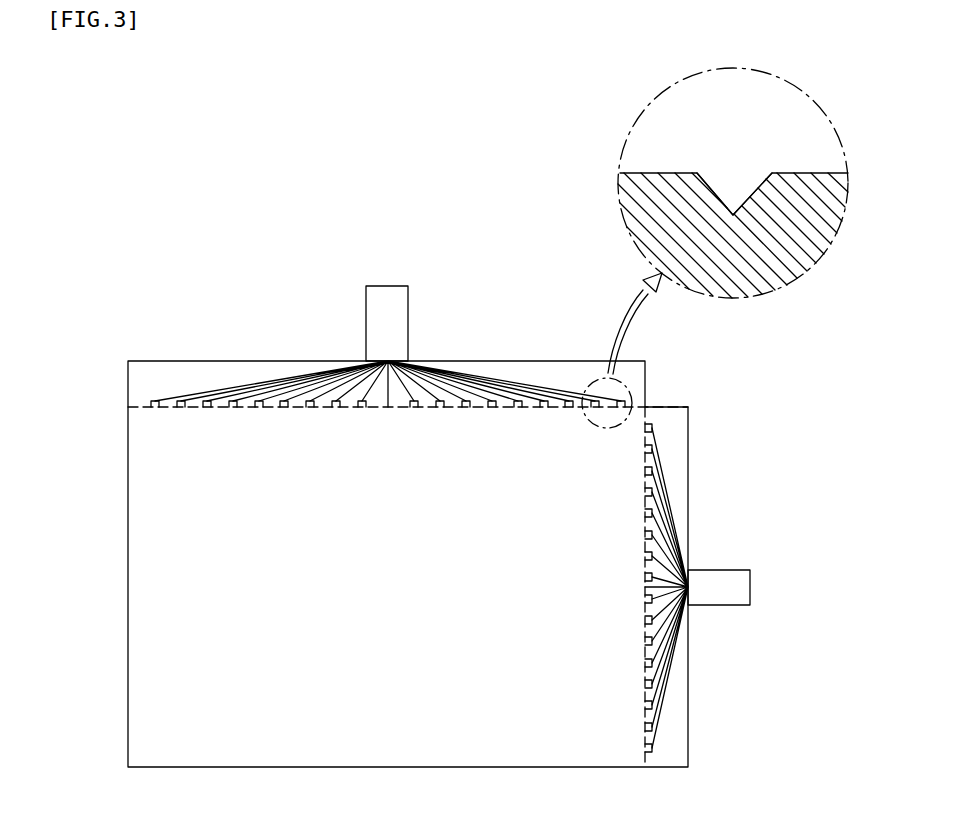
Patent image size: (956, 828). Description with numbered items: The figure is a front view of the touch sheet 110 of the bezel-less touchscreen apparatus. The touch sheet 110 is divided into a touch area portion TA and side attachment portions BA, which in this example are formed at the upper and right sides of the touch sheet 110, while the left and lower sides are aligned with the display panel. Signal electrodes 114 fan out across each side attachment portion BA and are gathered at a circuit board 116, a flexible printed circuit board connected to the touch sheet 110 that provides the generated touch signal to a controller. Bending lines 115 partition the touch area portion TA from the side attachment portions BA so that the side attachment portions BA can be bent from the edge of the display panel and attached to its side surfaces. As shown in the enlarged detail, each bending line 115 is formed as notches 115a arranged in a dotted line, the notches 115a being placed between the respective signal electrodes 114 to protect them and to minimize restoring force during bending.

The touch sheet 110 is at (202, 253).
The signal electrodes 114 is at (302, 373).
The bending lines 115 is at (622, 370).
The notches 115a is at (748, 196).
The circuit board 116 is at (386, 297).
The side attachment portions BA is at (212, 373).
The touch area portion TA is at (202, 527).